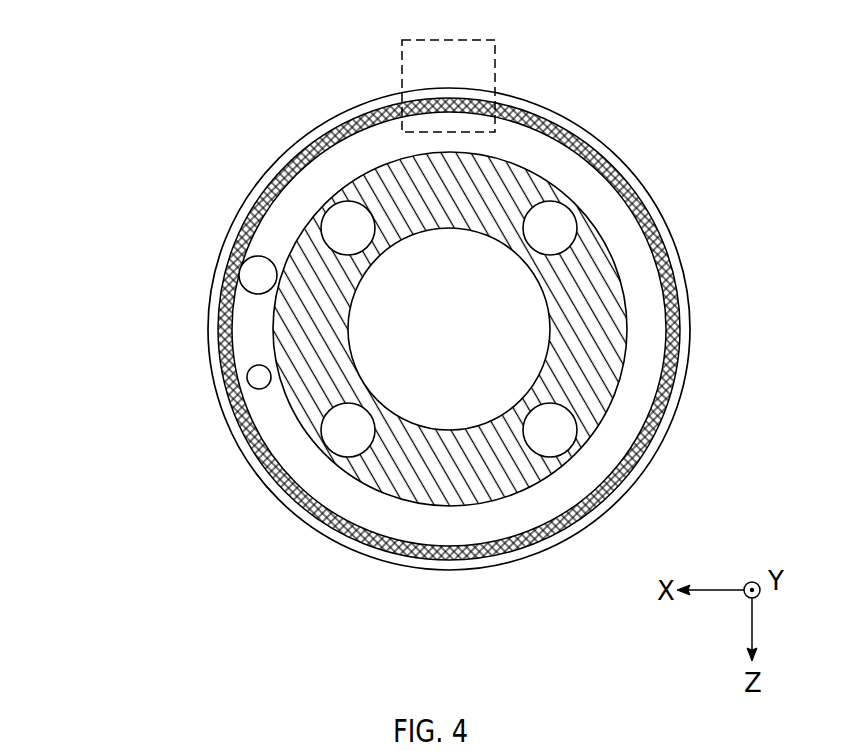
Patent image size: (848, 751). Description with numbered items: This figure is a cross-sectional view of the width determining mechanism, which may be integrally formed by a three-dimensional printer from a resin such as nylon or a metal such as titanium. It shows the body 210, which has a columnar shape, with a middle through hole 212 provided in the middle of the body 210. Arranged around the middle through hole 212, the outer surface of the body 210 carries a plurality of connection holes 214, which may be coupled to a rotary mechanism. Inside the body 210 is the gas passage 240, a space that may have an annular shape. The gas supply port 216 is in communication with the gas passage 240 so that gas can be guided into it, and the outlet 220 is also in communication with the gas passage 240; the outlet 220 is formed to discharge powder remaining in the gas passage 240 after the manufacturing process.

The body 210 is at (592, 127).
The middle through hole 212 is at (452, 228).
The connection holes 214 is at (333, 210).
The gas supply port 216 is at (248, 376).
The outlet 220 is at (240, 272).
The gas passage 240 is at (623, 240).